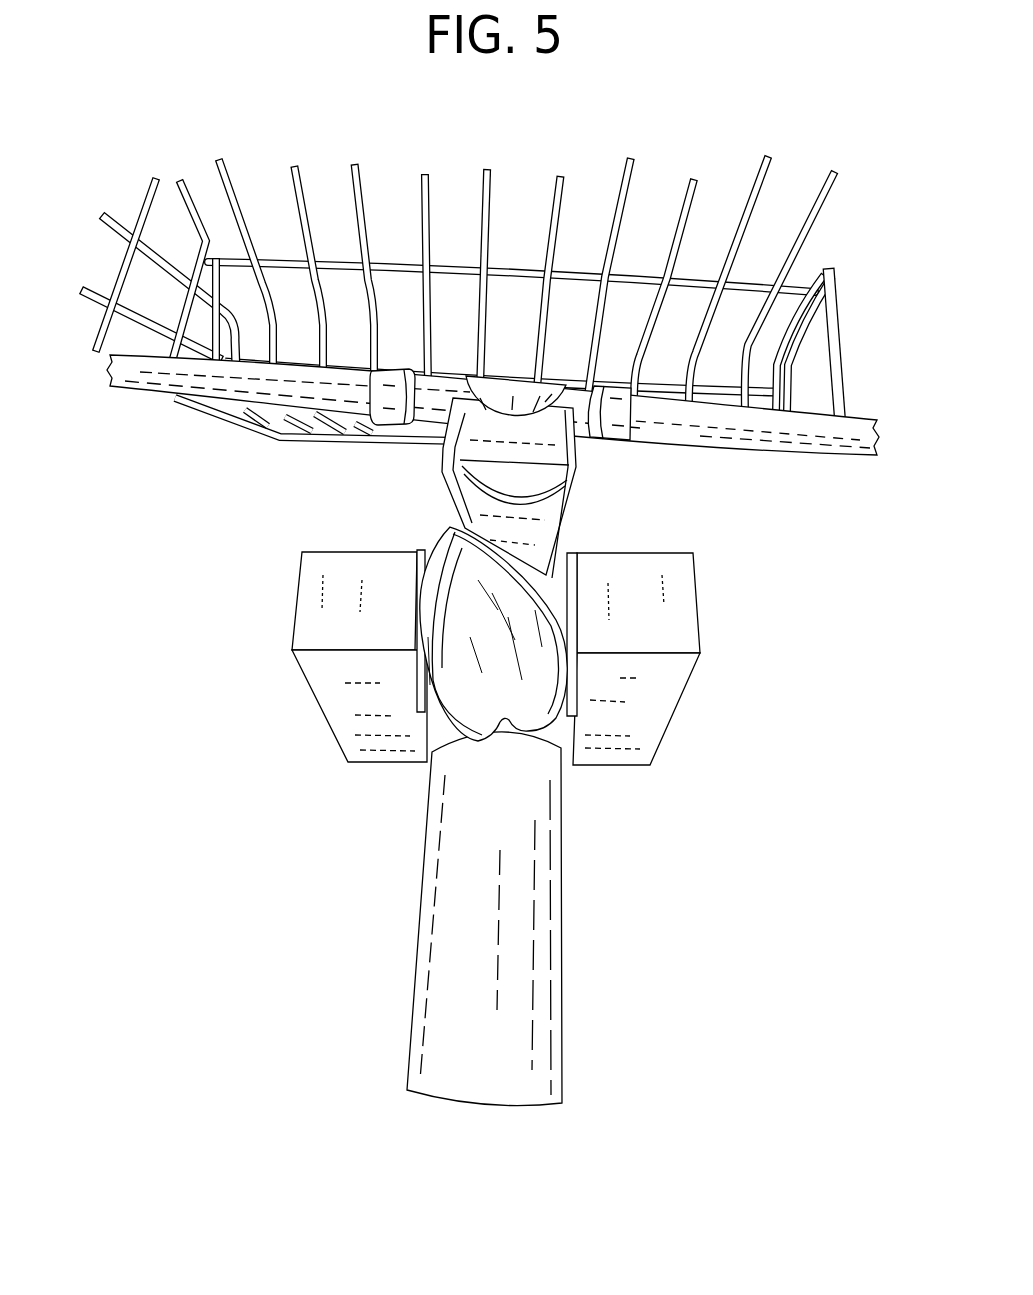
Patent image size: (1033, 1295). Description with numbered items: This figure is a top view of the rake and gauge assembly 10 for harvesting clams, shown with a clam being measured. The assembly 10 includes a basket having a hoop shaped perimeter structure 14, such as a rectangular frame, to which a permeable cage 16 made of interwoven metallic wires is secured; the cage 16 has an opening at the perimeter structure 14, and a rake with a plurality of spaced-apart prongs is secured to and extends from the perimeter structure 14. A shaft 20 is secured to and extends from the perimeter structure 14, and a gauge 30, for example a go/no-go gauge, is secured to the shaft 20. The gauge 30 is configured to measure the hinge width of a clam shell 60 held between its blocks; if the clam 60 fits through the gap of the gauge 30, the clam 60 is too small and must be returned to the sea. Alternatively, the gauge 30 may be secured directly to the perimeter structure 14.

The rake and gauge assembly 10 is at (481, 300).
The perimeter structure 14 is at (830, 433).
The permeable cage 16 is at (127, 262).
The shaft 20 is at (563, 882).
The gauge 30 is at (682, 585).
The clam shell 60 is at (527, 620).